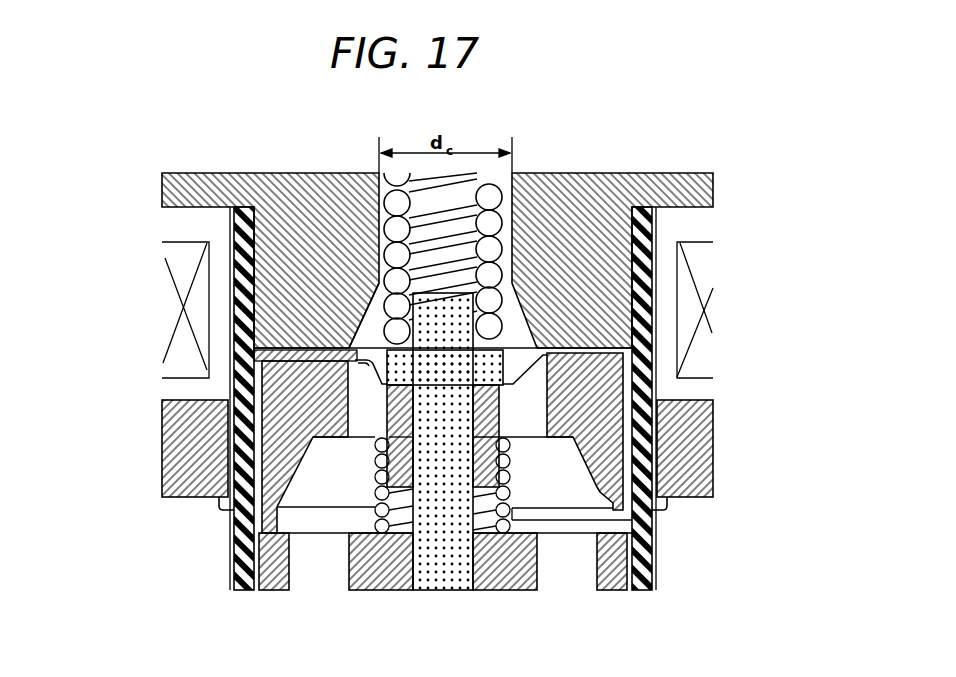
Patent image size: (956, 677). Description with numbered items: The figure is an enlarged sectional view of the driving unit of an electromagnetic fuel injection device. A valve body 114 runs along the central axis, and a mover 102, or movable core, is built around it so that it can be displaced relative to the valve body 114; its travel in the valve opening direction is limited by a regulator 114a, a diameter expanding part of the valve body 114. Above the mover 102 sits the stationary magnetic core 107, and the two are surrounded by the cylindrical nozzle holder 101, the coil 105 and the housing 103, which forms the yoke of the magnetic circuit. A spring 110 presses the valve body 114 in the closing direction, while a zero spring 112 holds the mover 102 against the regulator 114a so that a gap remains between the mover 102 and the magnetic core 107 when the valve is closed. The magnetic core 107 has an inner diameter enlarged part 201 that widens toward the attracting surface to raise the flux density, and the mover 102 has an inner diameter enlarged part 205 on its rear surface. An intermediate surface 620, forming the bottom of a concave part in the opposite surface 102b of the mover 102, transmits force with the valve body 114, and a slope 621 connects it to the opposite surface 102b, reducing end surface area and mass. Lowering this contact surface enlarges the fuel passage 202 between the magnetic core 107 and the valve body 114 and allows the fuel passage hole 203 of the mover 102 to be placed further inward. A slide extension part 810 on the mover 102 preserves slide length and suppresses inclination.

The nozzle holder 101 is at (234, 535).
The mover 102 is at (322, 427).
The opposite surface 102b is at (297, 352).
The housing 103 is at (182, 451).
The coil 105 is at (172, 368).
The magnetic core 107 is at (270, 220).
The spring 110 is at (503, 203).
The zero spring 112 is at (515, 500).
The valve body 114 is at (457, 577).
The regulator 114a is at (560, 357).
The inner diameter enlarged part 201 is at (347, 273).
The fuel passage 202 is at (520, 330).
The fuel passage hole 203 is at (530, 398).
The inner diameter enlarged part 205 is at (613, 500).
The intermediate surface 620 is at (433, 383).
The slope 621 is at (355, 360).
The slide extension part 810 is at (410, 480).